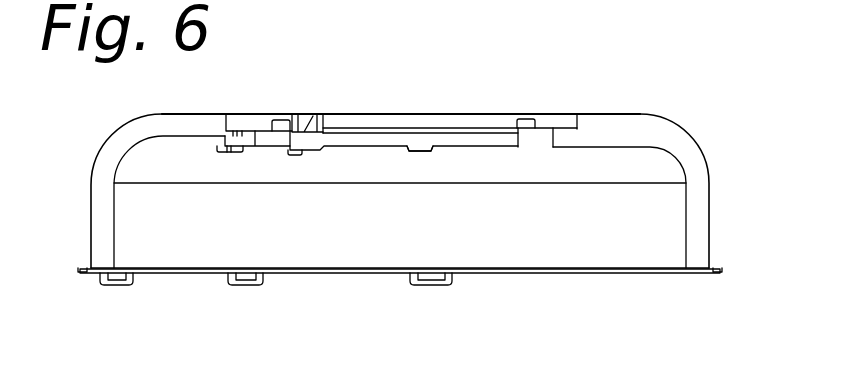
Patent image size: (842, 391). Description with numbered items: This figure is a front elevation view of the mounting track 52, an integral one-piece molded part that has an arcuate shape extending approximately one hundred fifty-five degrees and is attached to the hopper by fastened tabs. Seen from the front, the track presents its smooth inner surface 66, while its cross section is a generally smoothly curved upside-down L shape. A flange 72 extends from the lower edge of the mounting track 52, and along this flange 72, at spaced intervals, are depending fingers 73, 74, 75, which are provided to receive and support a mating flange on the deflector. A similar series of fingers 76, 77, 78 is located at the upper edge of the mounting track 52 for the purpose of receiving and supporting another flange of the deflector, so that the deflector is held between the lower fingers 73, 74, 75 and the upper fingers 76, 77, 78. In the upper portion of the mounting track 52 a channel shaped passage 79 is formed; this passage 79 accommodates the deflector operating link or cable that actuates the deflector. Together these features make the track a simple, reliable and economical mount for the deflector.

The mounting track 52 is at (488, 97).
The inner surface 66 is at (527, 246).
The flange 72 is at (400, 134).
The depending finger 73 is at (113, 285).
The depending finger 74 is at (240, 285).
The depending finger 75 is at (430, 285).
The finger 76 is at (230, 151).
The finger 77 is at (292, 153).
The finger 78 is at (432, 152).
The channel shaped passage 79 is at (312, 113).